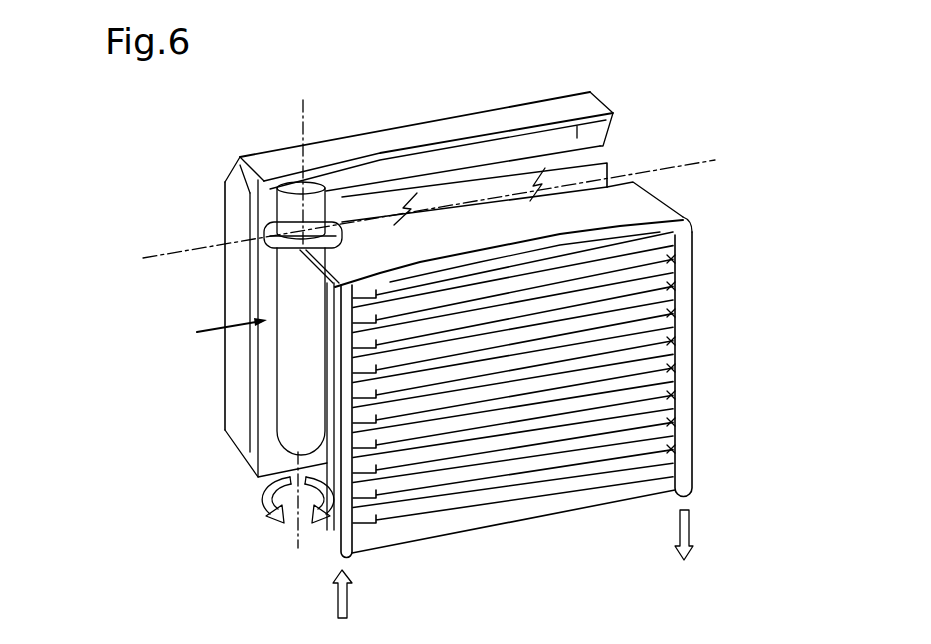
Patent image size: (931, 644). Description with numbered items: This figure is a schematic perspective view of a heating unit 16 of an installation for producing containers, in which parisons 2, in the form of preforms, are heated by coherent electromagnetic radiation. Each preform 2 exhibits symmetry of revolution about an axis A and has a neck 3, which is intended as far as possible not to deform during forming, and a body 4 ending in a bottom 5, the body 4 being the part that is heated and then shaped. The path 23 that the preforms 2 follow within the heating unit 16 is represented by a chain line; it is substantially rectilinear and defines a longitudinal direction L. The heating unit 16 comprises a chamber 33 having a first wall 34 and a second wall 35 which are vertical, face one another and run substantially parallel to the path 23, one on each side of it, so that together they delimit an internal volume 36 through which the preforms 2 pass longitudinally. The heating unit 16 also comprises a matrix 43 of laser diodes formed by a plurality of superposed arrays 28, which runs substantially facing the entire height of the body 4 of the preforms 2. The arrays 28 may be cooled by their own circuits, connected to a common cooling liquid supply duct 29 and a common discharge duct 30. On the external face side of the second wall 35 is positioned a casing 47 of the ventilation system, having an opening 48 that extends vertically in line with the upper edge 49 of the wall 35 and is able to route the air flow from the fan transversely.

The parison 2 is at (270, 289).
The neck 3 is at (239, 166).
The body 4 is at (276, 370).
The bottom 5 is at (250, 453).
The heating unit 16 is at (468, 110).
The path 23 is at (150, 256).
The superposed arrays 28 is at (675, 278).
The cooling liquid supply duct 29 is at (334, 534).
The cooling liquid discharge duct 30 is at (694, 492).
The chamber 33 is at (614, 133).
The first wall 34 is at (688, 215).
The second wall 35 is at (610, 165).
The internal volume 36 is at (450, 192).
The matrix of laser diodes 43 is at (559, 506).
The casing 47 is at (222, 420).
The opening 48 is at (505, 148).
The upper edge 49 is at (372, 182).
The axis A is at (303, 117).
The longitudinal direction L is at (210, 328).